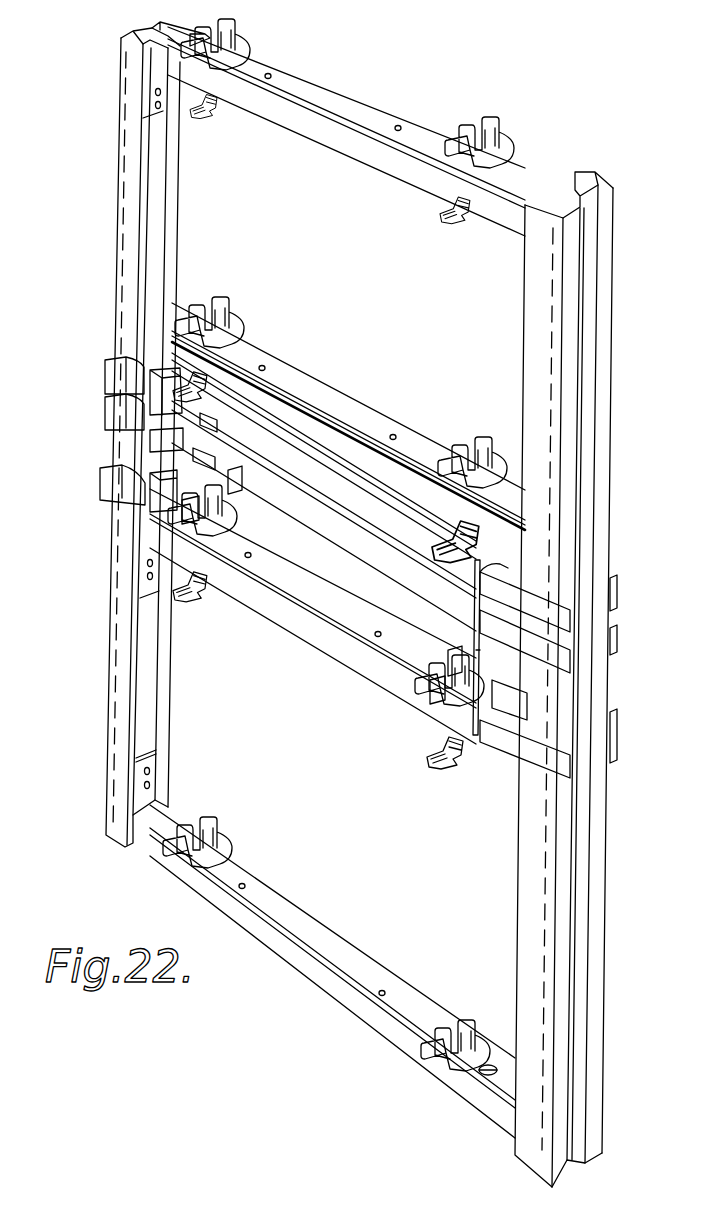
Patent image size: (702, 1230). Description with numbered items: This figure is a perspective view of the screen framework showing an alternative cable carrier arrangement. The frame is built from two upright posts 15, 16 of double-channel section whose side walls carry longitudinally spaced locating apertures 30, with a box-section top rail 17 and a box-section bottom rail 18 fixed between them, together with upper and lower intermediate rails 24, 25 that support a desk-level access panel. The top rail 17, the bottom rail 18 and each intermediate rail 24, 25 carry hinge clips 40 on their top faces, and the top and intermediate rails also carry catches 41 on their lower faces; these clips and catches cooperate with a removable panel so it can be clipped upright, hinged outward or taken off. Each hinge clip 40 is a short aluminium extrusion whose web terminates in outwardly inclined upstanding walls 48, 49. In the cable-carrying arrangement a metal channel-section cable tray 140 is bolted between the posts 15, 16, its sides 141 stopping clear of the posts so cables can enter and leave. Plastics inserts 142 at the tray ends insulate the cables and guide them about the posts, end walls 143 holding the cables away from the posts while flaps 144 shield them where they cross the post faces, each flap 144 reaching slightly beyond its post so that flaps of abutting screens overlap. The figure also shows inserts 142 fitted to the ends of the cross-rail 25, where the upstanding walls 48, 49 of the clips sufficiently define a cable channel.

The post 15 is at (132, 250).
The post 16 is at (545, 387).
The top rail 17 is at (372, 112).
The bottom rail 18 is at (278, 950).
The upper intermediate rail 24 is at (380, 412).
The lower intermediate rail 25 is at (276, 618).
The locating apertures 30 is at (122, 275).
The hinge clip 40 is at (240, 40).
The catch 41 is at (442, 222).
The upstanding wall 48 is at (240, 480).
The upstanding wall 49 is at (198, 515).
The cable tray 140 is at (440, 372).
The tray sides 141 is at (312, 470).
The insert 142 is at (112, 368).
The end wall 143 is at (160, 375).
The flap 144 is at (103, 398).